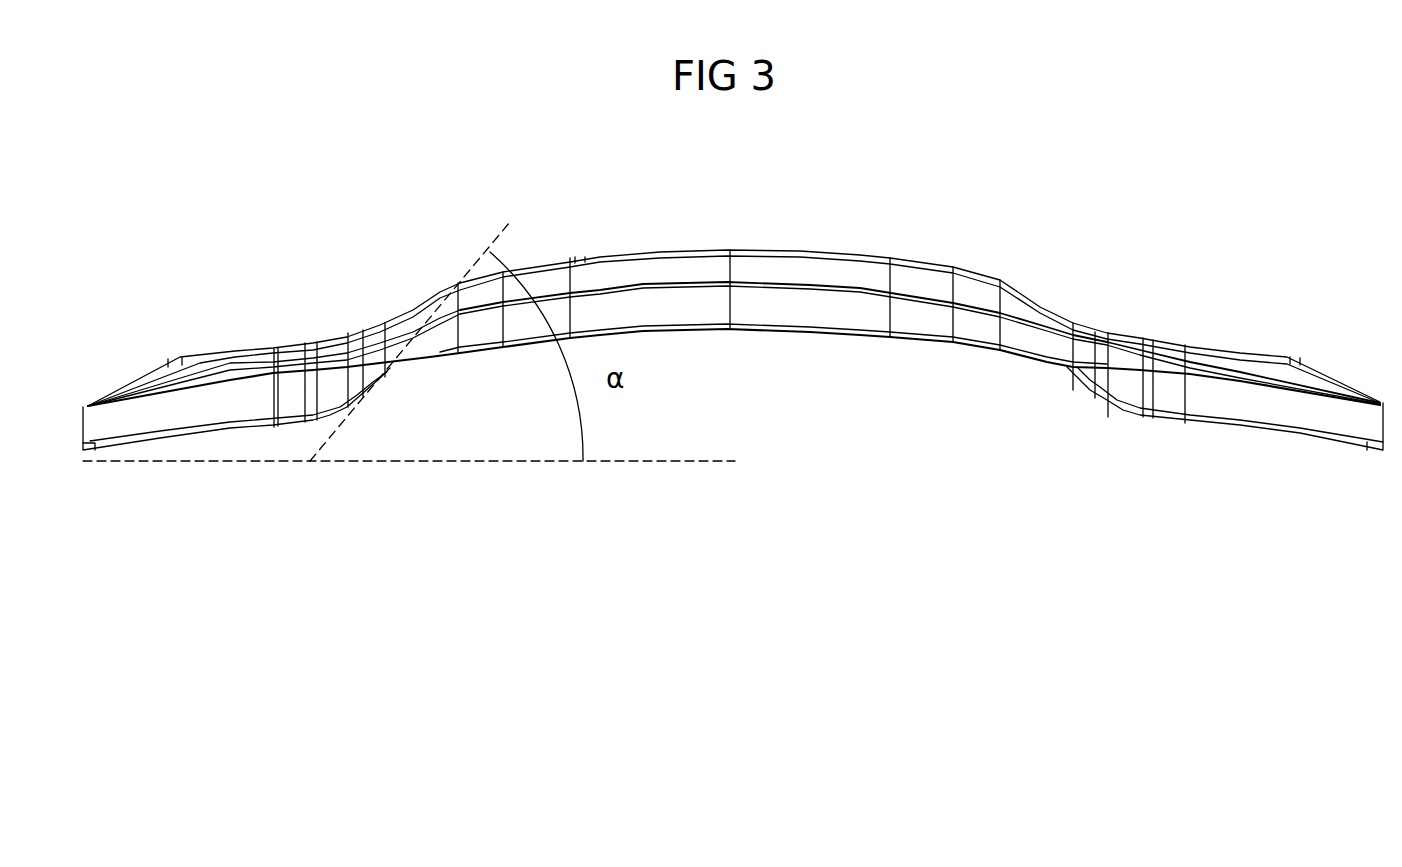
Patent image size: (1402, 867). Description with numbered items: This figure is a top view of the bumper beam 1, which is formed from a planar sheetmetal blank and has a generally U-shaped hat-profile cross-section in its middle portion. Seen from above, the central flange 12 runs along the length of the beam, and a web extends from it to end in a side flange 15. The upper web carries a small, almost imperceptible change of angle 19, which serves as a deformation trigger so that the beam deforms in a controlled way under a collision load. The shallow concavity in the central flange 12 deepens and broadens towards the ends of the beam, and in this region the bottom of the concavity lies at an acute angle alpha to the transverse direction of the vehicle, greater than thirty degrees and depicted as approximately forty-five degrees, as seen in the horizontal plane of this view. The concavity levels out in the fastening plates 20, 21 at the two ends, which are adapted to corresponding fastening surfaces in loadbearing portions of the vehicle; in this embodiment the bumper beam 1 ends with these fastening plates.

The bumper beam 1 is at (1021, 261).
The central flange 12 is at (675, 258).
The side flange 15 is at (827, 340).
The change of angle 19 is at (240, 356).
The fastening plate 20 is at (235, 430).
The fastening plate 21 is at (1270, 437).